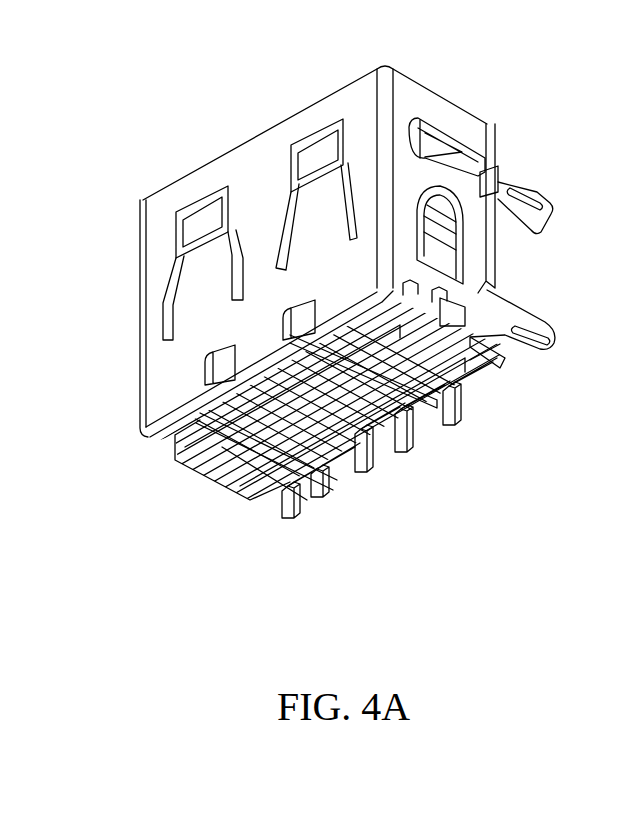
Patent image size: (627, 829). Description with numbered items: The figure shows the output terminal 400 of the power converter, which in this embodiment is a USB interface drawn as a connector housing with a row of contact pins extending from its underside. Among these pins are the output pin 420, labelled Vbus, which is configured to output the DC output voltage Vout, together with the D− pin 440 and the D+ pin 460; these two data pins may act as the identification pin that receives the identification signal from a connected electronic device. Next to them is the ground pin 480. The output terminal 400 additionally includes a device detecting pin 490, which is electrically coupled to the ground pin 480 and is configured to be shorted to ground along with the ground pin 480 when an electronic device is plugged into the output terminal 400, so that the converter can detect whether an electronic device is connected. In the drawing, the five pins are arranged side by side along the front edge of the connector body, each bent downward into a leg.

The output terminal 400 is at (87, 67).
The output pin (Vbus) 420 is at (451, 424).
The D− pin 440 is at (403, 452).
The D+ pin 460 is at (360, 470).
The ground pin 480 is at (313, 497).
The device detecting pin 490 is at (287, 518).